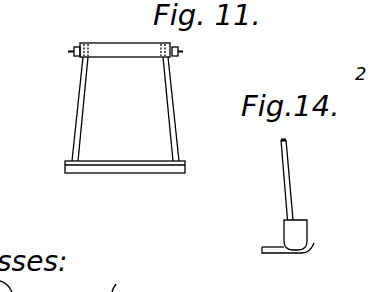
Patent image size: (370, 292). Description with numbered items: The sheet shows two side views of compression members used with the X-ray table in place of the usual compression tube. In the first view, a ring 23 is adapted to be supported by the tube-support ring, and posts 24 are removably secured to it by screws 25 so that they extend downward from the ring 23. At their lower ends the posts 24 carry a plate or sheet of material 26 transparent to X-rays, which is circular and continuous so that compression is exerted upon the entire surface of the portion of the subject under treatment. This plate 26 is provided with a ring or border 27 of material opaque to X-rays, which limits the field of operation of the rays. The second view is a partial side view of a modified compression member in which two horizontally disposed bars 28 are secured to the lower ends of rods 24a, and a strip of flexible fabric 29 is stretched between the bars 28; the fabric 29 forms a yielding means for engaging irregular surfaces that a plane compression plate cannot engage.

In FIG. 11, the ring 23 is at (108, 43).
In FIG. 11, the posts 24 is at (86, 105).
In FIG. 14, the rods 24a is at (295, 173).
In FIG. 11, the screws 25 is at (67, 51).
In FIG. 11, the plate or sheet of material transparent to X-rays 26 is at (84, 167).
In FIG. 11, the ring or border of material opaque to X-rays 27 is at (116, 163).
In FIG. 14, the bars 28 is at (298, 229).
In FIG. 14, the strip of flexible fabric 29 is at (265, 254).